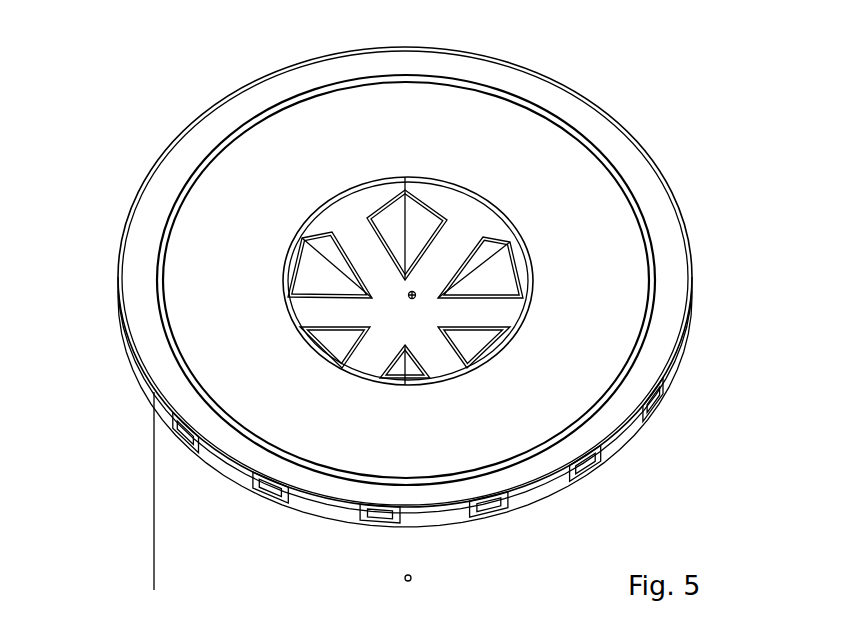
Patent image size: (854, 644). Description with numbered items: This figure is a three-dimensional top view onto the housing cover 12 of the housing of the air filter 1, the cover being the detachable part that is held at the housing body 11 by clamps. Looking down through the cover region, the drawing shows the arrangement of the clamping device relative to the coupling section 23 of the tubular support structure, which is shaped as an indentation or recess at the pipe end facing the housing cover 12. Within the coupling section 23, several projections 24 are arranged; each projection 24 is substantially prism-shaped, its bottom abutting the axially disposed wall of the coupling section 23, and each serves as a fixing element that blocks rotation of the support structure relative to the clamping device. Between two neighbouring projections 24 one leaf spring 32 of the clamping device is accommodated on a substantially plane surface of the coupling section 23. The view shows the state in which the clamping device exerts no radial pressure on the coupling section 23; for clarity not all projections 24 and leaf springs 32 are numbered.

The filter 1 is at (662, 115).
The housing body 11 is at (118, 440).
The housing cover 12 is at (687, 350).
The coupling section 23 is at (357, 203).
The projection 24 is at (425, 218).
The leaf spring 32 is at (313, 213).